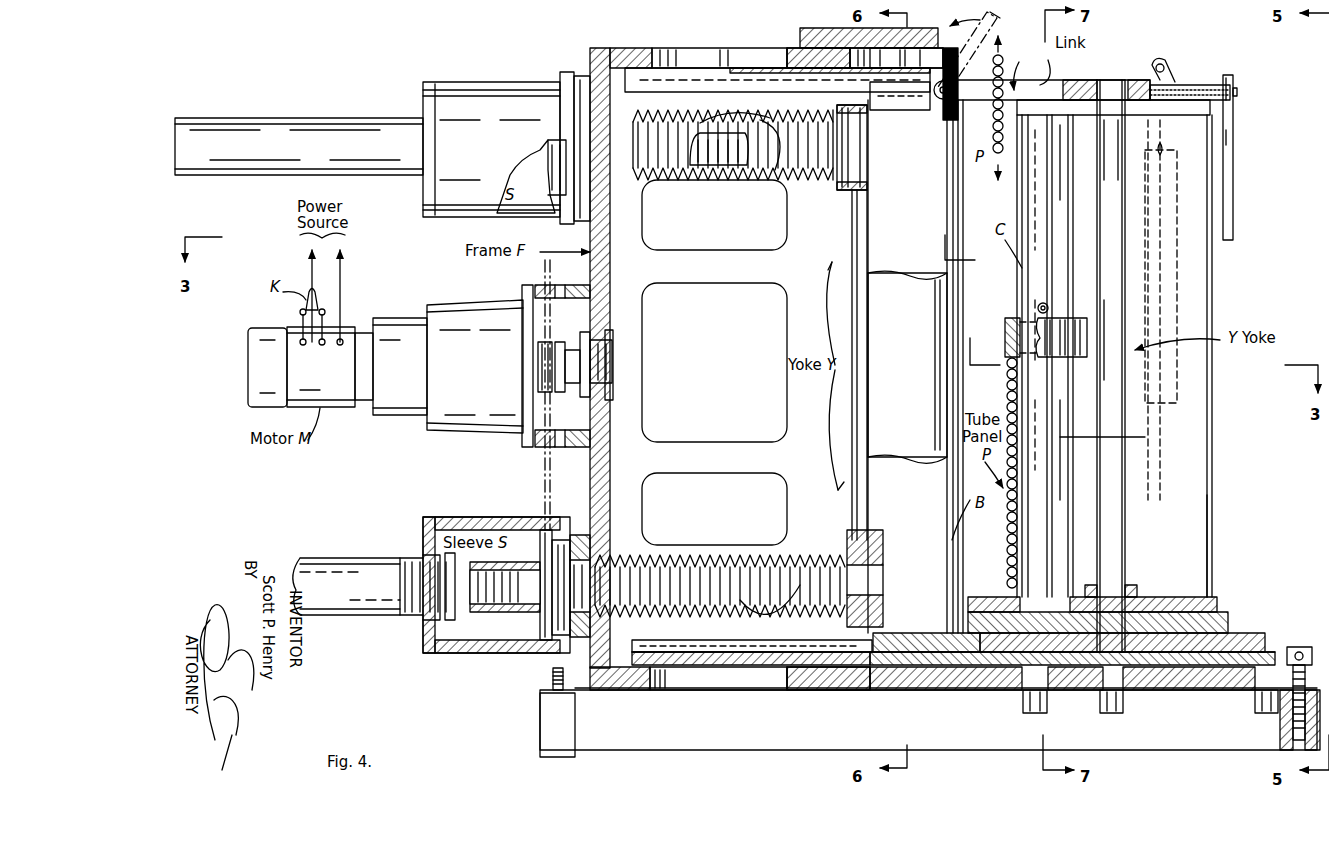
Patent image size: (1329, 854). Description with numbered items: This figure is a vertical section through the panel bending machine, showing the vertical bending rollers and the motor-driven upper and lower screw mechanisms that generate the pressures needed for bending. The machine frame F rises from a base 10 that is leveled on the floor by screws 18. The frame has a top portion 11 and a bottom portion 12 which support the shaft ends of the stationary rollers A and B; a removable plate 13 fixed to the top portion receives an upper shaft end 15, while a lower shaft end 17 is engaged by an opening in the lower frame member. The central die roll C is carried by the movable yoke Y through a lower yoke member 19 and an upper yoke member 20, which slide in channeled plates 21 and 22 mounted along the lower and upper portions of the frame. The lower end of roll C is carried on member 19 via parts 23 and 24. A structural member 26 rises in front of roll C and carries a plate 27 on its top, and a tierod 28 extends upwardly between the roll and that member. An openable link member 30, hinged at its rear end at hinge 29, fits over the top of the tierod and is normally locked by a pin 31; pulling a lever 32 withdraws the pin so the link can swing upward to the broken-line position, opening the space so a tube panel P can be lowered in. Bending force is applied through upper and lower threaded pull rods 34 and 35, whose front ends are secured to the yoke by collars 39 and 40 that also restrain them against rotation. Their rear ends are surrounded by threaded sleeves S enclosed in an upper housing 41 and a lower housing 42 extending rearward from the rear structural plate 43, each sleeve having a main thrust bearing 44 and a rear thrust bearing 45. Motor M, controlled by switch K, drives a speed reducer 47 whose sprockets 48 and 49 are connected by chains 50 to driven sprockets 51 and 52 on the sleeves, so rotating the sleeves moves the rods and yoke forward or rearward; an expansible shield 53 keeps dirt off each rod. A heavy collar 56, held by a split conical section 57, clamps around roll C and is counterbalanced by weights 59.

The base 10 is at (726, 735).
The top portion 11 is at (796, 48).
The bottom portion 12 is at (828, 680).
The removable plate 13 is at (832, 28).
The upper shaft end 15 is at (910, 46).
The lower shaft end 17 is at (906, 680).
The screws 18 is at (550, 675).
The lower yoke member 19 is at (1250, 640).
The upper yoke member 20 is at (895, 112).
The channeled plate 21 is at (728, 652).
The channeled plate 22 is at (700, 82).
The part 23 is at (1228, 620).
The part 24 is at (992, 598).
The structural member 26 is at (1218, 498).
The plate 27 is at (1190, 116).
The tierod 28 is at (1130, 245).
The hinge 29 is at (940, 100).
The openable link member 30 is at (1000, 26).
The pin 31 is at (1178, 85).
The lever 32 is at (1233, 158).
The upper threaded pull rod 34 is at (718, 166).
The lower threaded pull rod 35 is at (690, 556).
The collar 39 is at (840, 170).
The collar 40 is at (848, 545).
The upper housing 41 is at (520, 84).
The lower housing 42 is at (495, 518).
The rear structural plate 43 is at (610, 296).
The main thrust bearing 44 is at (562, 644).
The rear thrust bearing 45 is at (423, 634).
The speed reducer 47 is at (490, 435).
The sprocket 48 is at (546, 341).
The sprocket 49 is at (565, 393).
The chains 50 is at (544, 268).
The driven sprocket 51 is at (555, 213).
The driven sprocket 52 is at (545, 620).
The expansible shield 53 is at (772, 172).
The collar 56 is at (1004, 330).
The split conical section 57 is at (1020, 318).
The weights 59 is at (1162, 305).